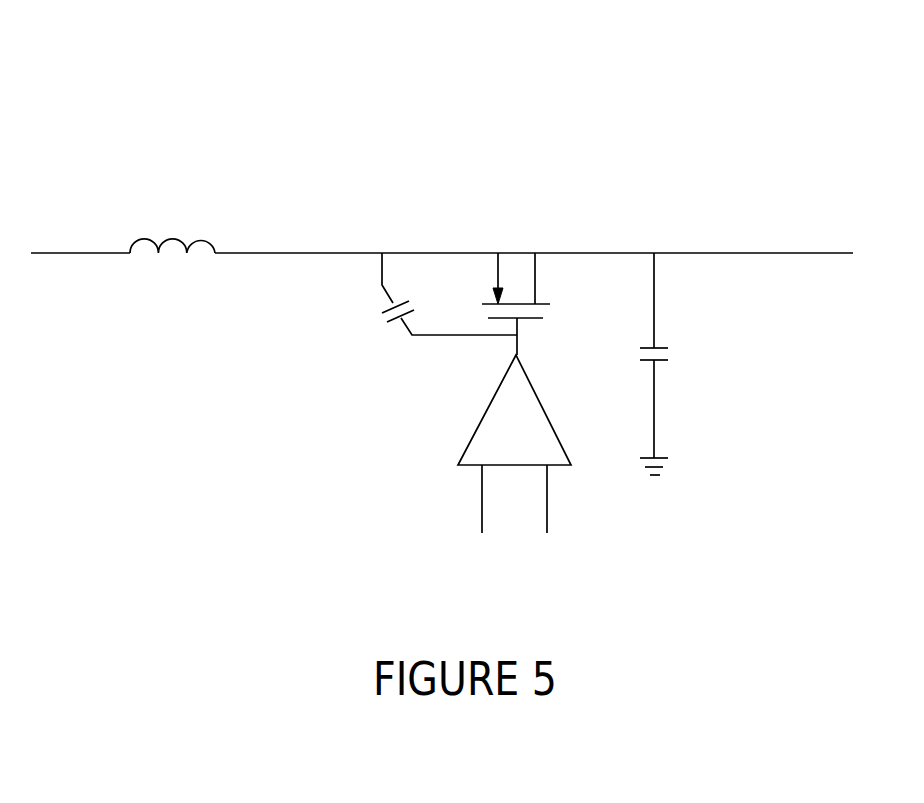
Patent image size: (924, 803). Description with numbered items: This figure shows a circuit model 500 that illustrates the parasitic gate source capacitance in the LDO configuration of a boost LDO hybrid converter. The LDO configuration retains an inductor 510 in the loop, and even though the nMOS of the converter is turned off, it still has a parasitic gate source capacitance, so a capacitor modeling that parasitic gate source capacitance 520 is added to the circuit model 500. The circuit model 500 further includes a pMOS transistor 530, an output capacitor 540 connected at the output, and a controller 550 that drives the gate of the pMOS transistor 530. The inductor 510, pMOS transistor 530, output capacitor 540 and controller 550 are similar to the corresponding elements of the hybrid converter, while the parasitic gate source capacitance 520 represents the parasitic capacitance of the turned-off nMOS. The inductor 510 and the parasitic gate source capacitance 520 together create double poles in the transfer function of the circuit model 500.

The circuit model 500 is at (464, 287).
The inductor 510 is at (200, 238).
The capacitor modeling parasitic gate source capacitance C_gs 520 is at (397, 333).
The pMOS P1 530 is at (488, 223).
The output capacitor C_bst 540 is at (665, 368).
The controller 550 is at (542, 402).